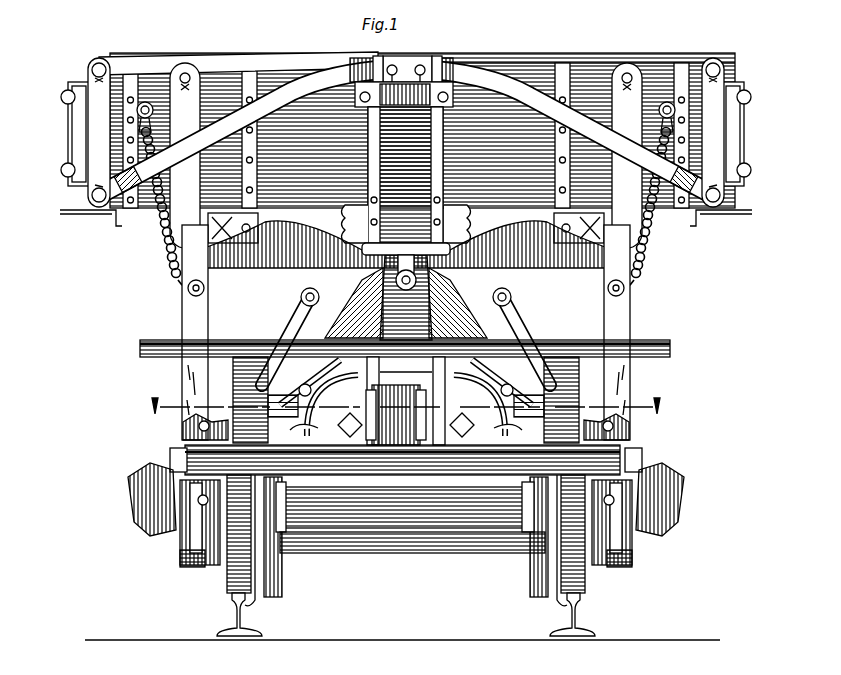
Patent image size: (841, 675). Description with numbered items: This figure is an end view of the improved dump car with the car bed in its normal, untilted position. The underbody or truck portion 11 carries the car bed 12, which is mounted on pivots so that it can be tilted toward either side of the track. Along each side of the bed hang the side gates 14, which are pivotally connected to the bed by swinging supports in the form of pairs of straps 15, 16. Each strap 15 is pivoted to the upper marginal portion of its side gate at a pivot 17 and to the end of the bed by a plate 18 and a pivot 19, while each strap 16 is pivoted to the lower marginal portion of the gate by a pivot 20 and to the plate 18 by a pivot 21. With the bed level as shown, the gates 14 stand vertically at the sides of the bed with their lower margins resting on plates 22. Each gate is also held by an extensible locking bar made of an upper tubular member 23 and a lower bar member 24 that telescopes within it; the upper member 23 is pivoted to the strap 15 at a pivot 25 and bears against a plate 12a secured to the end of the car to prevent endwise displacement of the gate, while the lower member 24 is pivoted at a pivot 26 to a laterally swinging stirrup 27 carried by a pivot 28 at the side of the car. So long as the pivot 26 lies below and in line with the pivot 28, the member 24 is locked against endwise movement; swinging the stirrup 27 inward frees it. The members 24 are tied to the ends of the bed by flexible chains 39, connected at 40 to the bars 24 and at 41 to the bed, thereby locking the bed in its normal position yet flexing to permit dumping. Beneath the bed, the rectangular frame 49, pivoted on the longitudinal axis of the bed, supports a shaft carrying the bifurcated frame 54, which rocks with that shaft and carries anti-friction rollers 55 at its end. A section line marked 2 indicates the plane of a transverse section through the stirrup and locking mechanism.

The section line 2- 2 is at (399, 407).
The underbody or truck portion 11 is at (400, 530).
The car bed 12 is at (527, 66).
The plates 12a is at (223, 109).
The side gates 14 is at (68, 148).
The straps 15 is at (215, 78).
The straps 16 is at (287, 72).
The pivot 17 is at (91, 66).
The plates 18 is at (404, 70).
The pivots 19 is at (359, 97).
The pivots 20 is at (92, 199).
The pivots 21 is at (378, 60).
The plates 22 is at (100, 222).
The upper member 23 is at (180, 250).
The lower member 24 is at (182, 320).
The pivot 25 is at (192, 65).
The pivot 26 is at (200, 500).
The stirrup 27 is at (175, 462).
The pivot 28 is at (185, 428).
The chains 39 is at (153, 244).
The connection 40 is at (205, 288).
The connection 41 is at (145, 102).
The frame 49 is at (350, 326).
The bifurcated frame 54 is at (292, 326).
The anti-friction rollers 55 is at (319, 296).